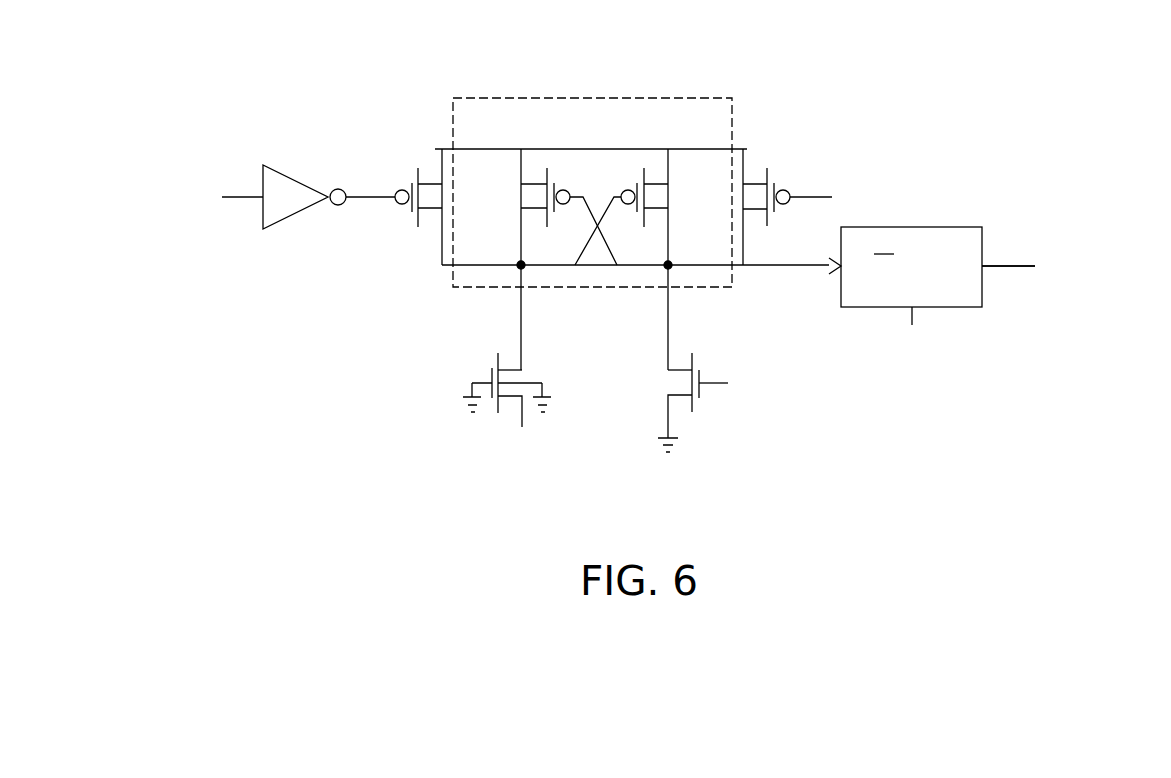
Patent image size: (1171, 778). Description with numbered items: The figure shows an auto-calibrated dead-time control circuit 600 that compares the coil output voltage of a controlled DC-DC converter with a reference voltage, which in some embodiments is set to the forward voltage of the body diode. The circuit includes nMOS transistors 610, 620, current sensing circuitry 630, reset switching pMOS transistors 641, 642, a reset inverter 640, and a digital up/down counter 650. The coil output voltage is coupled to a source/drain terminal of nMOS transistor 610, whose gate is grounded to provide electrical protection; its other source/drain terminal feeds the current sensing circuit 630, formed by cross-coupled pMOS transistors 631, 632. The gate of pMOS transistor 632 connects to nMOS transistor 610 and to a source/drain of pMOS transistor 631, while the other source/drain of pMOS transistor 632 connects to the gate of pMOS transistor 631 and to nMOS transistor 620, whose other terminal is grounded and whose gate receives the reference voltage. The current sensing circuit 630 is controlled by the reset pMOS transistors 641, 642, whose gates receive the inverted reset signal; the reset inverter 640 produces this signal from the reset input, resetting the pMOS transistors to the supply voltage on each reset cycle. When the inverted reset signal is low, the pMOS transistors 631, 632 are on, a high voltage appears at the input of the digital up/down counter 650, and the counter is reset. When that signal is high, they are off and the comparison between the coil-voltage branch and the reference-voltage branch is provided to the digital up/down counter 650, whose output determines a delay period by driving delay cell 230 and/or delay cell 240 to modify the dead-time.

The auto-calibrated dead-time control circuit 600 is at (927, 97).
The nMOS transistor 610 is at (492, 369).
The nMOS transistor 620 is at (700, 398).
The current sensing circuitry 630 is at (685, 134).
The pMOS transistor 631 is at (555, 183).
The pMOS transistor 632 is at (638, 212).
The reset inverter 640 is at (300, 180).
The reset switching pMOS transistor 641 is at (413, 170).
The reset switching pMOS transistor 642 is at (775, 185).
The digital up/down counter 650 is at (946, 227).
The delay cell 230 is at (1010, 268).
The delay cell 240 is at (1145, 339).